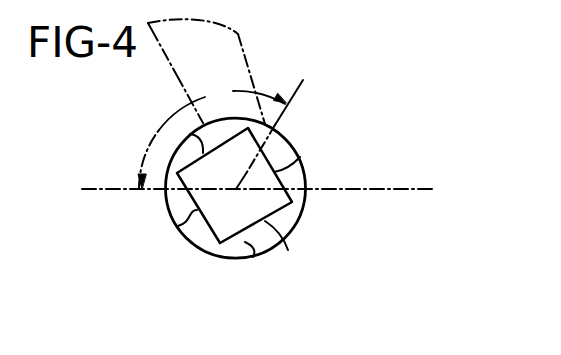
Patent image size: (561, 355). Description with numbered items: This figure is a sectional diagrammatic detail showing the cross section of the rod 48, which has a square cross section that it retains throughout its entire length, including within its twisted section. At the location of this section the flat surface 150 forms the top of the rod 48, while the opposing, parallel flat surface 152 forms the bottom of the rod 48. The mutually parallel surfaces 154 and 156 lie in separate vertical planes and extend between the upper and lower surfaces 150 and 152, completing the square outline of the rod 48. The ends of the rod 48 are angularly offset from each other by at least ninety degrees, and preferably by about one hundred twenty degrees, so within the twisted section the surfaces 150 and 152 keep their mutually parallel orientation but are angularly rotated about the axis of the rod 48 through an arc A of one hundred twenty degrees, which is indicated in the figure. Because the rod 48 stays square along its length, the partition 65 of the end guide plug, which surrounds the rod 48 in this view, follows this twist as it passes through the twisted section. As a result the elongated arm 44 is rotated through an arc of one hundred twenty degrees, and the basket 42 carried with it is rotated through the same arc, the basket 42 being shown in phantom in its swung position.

The basket 42 is at (244, 32).
The elongated arm 44 is at (207, 266).
The rod 48 is at (286, 213).
The partition 65 is at (253, 257).
The flat surface 150 is at (176, 224).
The flat surface 152 is at (300, 157).
The surface 154 is at (288, 250).
The surface 156 is at (168, 117).
The arc A is at (231, 134).